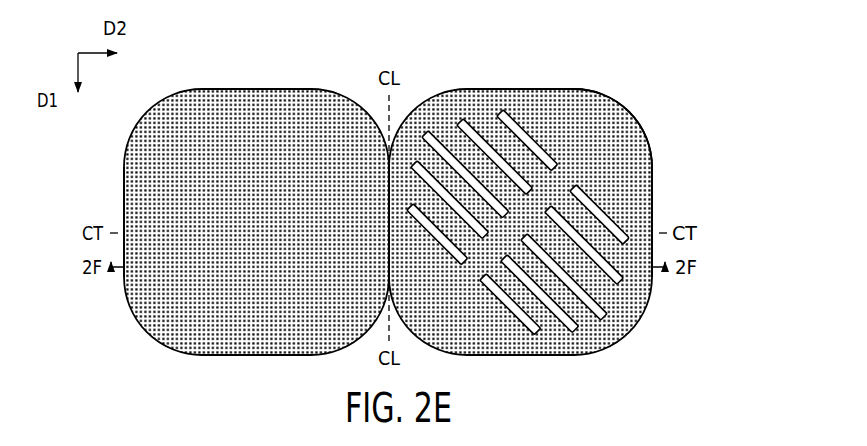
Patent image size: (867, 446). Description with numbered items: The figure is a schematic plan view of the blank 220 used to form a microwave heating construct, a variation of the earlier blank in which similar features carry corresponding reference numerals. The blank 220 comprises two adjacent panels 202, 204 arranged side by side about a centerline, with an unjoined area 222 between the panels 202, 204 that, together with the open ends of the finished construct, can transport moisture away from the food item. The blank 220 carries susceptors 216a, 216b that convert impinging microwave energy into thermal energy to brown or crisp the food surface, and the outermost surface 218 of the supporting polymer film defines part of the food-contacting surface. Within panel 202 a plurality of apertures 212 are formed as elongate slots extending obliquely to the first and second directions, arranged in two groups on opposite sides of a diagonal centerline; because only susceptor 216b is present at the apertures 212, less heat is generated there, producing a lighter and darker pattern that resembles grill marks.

The panel 202 is at (518, 97).
The panel 204 is at (257, 99).
The apertures 212 is at (520, 318).
The susceptor 216a is at (642, 190).
The susceptor 216b is at (133, 197).
The surface 218 is at (597, 135).
The blank 220 is at (703, 110).
The junction / center line interface 222 is at (389, 230).